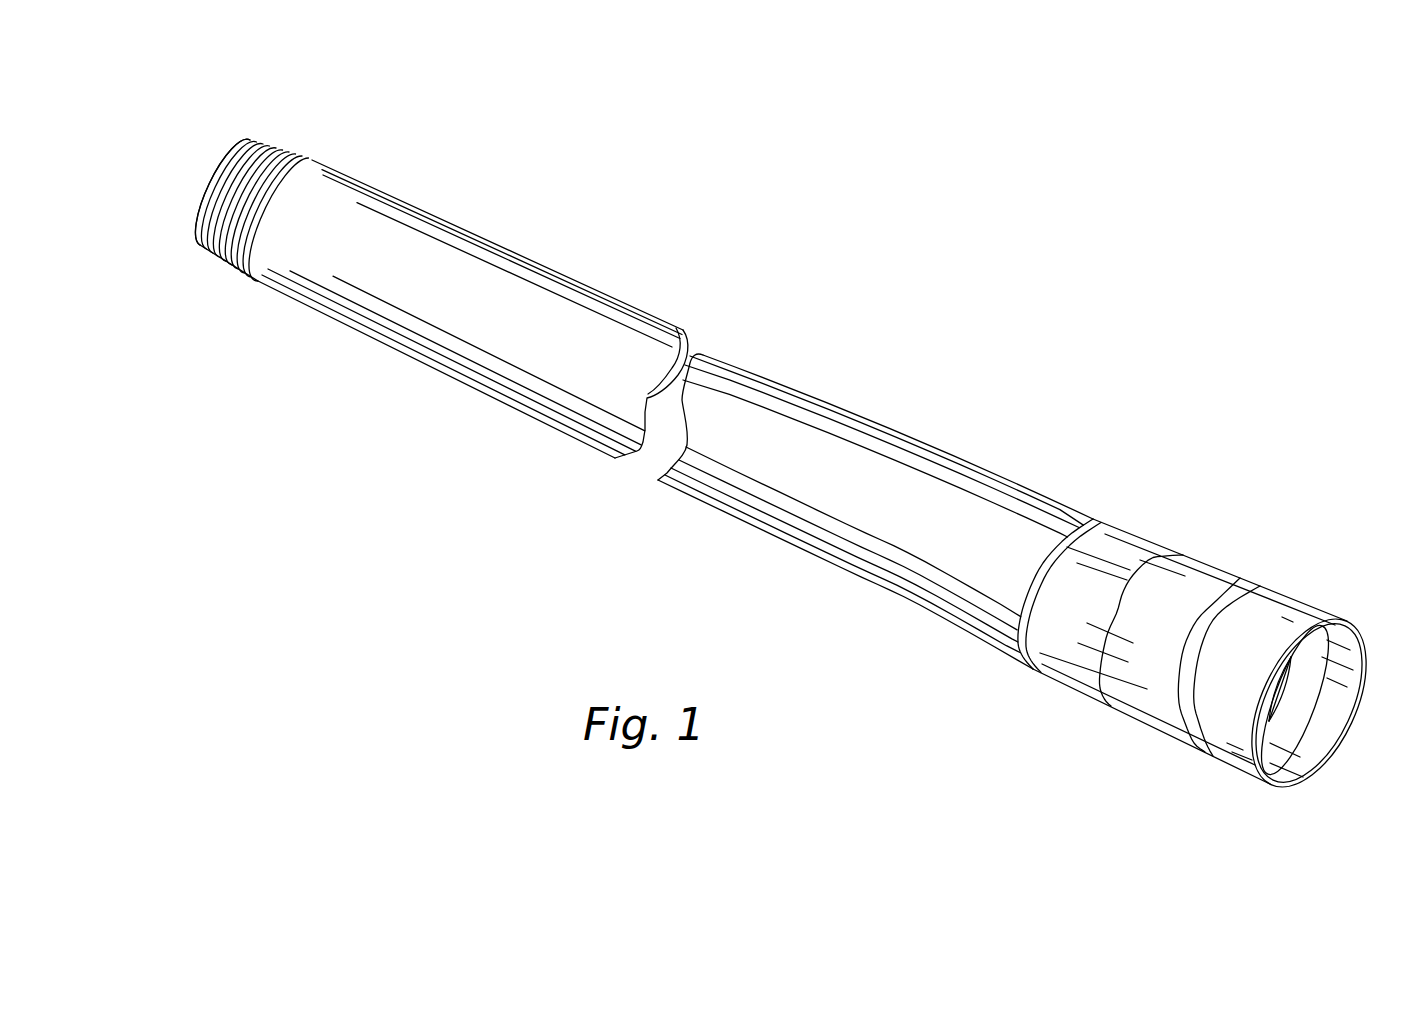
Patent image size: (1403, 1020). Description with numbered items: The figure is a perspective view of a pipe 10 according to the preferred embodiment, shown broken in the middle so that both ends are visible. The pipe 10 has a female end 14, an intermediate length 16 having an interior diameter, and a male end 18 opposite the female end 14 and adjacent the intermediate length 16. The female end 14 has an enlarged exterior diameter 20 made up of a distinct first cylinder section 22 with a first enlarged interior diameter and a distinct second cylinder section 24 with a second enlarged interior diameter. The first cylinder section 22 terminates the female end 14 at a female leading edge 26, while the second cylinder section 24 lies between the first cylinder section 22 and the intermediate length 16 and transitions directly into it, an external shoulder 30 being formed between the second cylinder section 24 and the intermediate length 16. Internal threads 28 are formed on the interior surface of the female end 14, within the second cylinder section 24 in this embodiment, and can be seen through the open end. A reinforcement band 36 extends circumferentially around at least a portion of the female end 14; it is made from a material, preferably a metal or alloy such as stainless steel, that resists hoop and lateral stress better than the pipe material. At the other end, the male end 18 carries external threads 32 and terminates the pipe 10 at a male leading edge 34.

The pipe 10 is at (791, 423).
The female end 14 is at (1190, 588).
The intermediate length 16 is at (758, 353).
The male end 18 is at (440, 250).
The enlarged exterior diameter 20 is at (1267, 790).
The first cylinder section 22 is at (1230, 675).
The second cylinder section 24 is at (1270, 580).
The female leading edge 26 is at (1348, 618).
The internal threads 28 is at (1285, 704).
The external shoulder 30 is at (1028, 577).
The external threads 32 is at (193, 249).
The male leading edge 34 is at (238, 149).
The reinforcement band 36 is at (1140, 637).